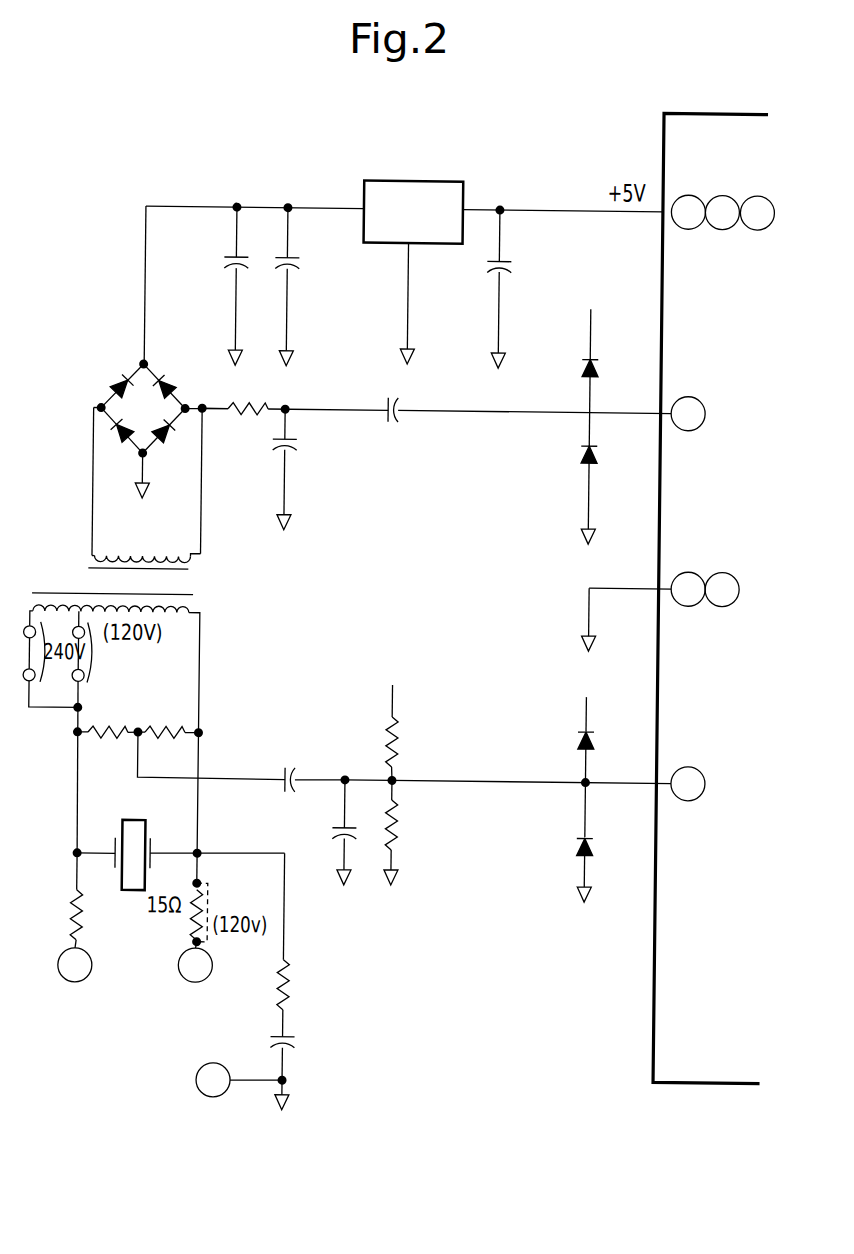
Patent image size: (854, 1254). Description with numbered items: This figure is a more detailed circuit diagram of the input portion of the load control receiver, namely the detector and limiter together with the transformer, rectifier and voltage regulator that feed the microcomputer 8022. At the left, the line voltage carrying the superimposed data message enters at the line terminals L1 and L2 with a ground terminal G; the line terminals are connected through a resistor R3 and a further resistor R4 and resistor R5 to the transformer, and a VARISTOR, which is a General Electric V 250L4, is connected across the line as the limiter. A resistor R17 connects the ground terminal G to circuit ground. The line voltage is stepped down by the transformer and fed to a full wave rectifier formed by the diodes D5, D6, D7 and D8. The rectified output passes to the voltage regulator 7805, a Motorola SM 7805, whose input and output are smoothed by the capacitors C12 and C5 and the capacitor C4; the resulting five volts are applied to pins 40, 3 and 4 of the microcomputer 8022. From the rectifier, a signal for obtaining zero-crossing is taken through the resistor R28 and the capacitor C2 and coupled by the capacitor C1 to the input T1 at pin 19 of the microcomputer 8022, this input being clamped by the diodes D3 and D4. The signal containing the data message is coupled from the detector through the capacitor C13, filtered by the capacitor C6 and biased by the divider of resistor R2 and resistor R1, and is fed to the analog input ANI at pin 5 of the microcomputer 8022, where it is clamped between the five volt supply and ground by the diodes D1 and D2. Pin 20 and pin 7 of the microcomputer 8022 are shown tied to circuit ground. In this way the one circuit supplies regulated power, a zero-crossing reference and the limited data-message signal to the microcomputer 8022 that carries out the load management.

The voltage regulator 7805 is at (412, 273).
The microcomputer 8022 is at (711, 598).
The pin 40 of the microcomputer 40 is at (688, 212).
The pin 3 of the microcomputer 3 is at (722, 212).
The pin 4 of the microcomputer 4 is at (757, 213).
The pin 19 of the microcomputer 19 is at (688, 414).
The pin 20 of the microcomputer 20 is at (643, 611).
The pin 7 of the microcomputer 7 is at (722, 589).
The pin 5 of the microcomputer 5 is at (688, 784).
The T1 input line T1 is at (566, 412).
The analog input line ANI is at (567, 783).
The filter capacitor C12 is at (225, 286).
The capacitor .1 C5 is at (296, 287).
The capacitor .1 C4 is at (507, 289).
The coupling capacitor .1uF C1 is at (418, 394).
The capacitor .1uF C2 is at (289, 467).
The coupling capacitor .01 C13 is at (308, 762).
The capacitor .1 C6 is at (349, 830).
The resistor 100K R28 is at (295, 389).
The resistor R1 is at (404, 832).
The resistor R2 is at (399, 721).
The resistor 15 ohm R3 is at (126, 901).
The resistor 100K R4 is at (106, 732).
The resistor 100K R5 is at (168, 733).
The resistor 1K R17 is at (299, 981).
The clamp diode D1 is at (591, 726).
The clamp diode D2 is at (597, 843).
The clamp diode D3 is at (599, 346).
The clamp diode D4 is at (601, 479).
The bridge rectifier diode D5 is at (120, 438).
The bridge rectifier diode D6 is at (115, 381).
The bridge rectifier diode D7 is at (168, 382).
The bridge rectifier diode D8 is at (165, 438).
The line terminal L1 is at (75, 965).
The line terminal L2 is at (195, 965).
The ground terminal G is at (239, 1080).
The varistor VARISTOR is at (137, 839).